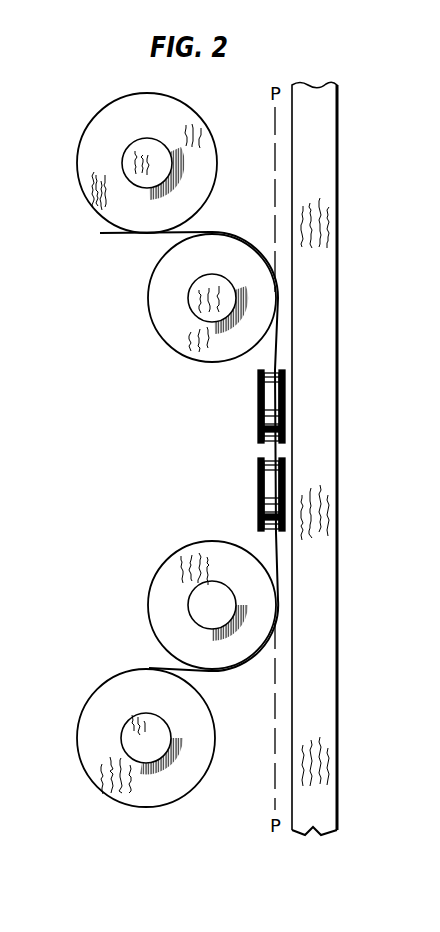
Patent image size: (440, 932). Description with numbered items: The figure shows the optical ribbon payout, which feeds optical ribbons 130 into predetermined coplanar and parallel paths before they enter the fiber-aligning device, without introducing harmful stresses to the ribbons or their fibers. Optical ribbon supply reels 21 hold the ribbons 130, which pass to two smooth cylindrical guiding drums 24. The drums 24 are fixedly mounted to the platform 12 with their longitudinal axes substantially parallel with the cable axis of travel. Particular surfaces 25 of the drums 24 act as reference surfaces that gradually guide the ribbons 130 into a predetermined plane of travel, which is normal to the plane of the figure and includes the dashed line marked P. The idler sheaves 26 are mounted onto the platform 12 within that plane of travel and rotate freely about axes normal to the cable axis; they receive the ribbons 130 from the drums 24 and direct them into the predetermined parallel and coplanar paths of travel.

The platform 12 is at (322, 715).
The optical ribbon supply reel 21 is at (103, 155).
The cylindrical guiding drum 24 is at (157, 288).
The surfaces of the drums 25 is at (253, 250).
The idler sheave 26 is at (258, 425).
The optical ribbon 130 is at (273, 352).